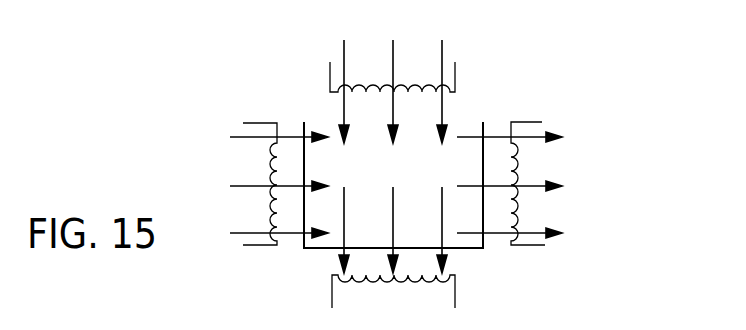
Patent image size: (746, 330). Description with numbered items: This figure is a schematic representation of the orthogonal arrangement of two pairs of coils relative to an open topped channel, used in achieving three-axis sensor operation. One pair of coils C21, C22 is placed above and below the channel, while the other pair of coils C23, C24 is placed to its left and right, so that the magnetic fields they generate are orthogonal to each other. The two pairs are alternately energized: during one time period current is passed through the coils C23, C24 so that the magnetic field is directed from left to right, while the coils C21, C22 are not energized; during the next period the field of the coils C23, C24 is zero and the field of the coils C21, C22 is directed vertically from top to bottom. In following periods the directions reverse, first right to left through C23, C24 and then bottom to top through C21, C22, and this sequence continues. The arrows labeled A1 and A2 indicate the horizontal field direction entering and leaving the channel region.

The coil C21 is at (455, 67).
The coil C22 is at (455, 292).
The coil C23 is at (252, 123).
The coil C24 is at (542, 122).
The input signal flux A1 is at (254, 185).
The output signal flux A2 is at (534, 185).